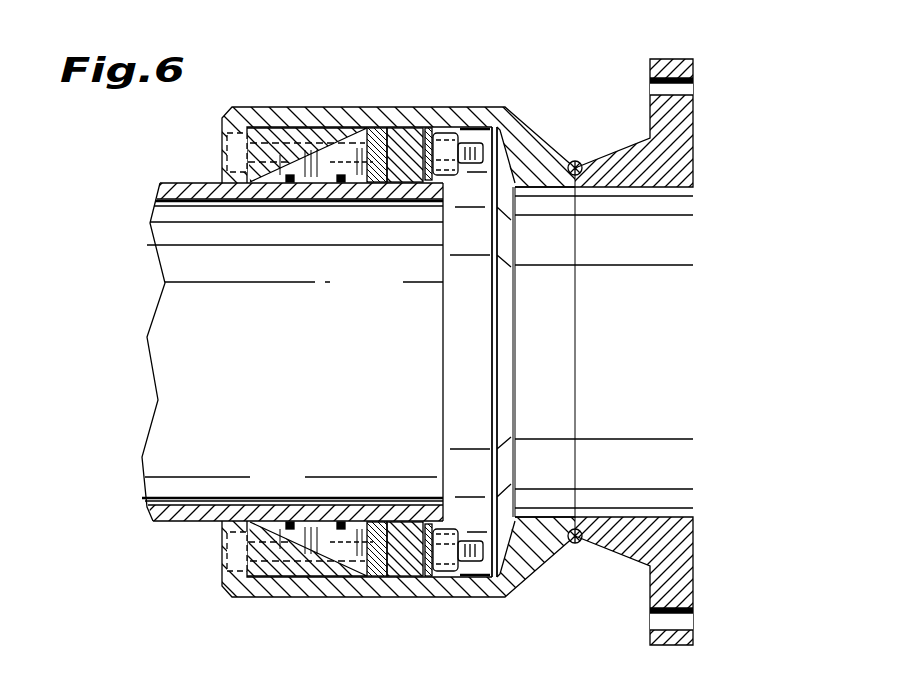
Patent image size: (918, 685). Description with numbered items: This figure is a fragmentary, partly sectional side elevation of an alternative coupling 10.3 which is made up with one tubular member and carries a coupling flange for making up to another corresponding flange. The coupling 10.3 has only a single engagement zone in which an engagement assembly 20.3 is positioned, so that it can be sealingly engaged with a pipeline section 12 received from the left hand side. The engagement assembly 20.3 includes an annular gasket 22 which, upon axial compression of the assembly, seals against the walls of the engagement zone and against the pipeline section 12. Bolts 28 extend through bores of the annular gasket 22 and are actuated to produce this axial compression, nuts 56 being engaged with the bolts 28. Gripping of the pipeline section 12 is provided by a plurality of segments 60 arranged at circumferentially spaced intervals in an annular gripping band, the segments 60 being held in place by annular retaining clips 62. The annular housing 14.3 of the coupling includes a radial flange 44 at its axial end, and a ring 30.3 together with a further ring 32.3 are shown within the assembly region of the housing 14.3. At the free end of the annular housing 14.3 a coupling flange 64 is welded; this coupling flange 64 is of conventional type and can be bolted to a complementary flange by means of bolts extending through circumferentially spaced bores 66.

The coupling 10.3 is at (404, 92).
The engagement assembly 20.3 is at (362, 118).
The pressure ring 30.3 is at (424, 126).
The annular housing 14.3 is at (485, 111).
The circumferentially spaced bores 66 is at (692, 88).
The support ring 32.3 is at (381, 183).
The pipeline section 12 is at (140, 460).
The annular retaining clips 62 is at (339, 524).
The radial flange 44 is at (222, 526).
The segments 60 is at (334, 557).
The annular gasket 22 is at (404, 579).
The nuts 56 is at (452, 577).
The bolts 28 is at (487, 589).
The coupling flange 64 is at (700, 554).